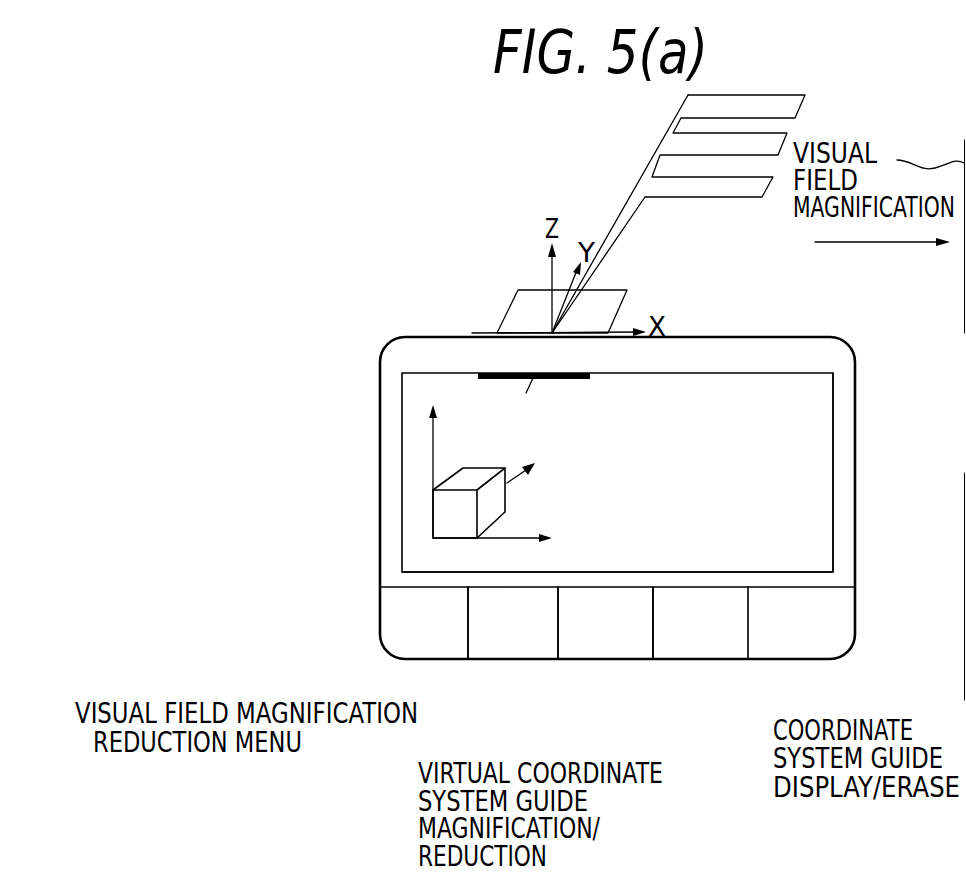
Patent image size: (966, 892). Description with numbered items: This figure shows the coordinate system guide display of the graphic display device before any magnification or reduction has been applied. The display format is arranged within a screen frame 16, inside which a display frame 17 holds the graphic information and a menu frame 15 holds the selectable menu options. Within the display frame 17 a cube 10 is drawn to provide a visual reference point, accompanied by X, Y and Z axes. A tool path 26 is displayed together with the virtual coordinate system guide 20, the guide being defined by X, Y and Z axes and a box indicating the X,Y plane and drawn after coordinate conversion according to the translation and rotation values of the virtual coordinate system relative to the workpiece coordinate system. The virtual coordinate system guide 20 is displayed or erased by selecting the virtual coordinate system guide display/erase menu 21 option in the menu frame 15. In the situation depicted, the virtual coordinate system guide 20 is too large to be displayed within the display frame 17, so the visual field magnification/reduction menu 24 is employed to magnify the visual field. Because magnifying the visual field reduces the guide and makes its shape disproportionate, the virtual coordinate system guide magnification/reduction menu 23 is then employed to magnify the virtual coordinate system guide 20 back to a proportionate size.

The cube 10 is at (457, 532).
The menu frame 15 is at (810, 657).
The screen frame 16 is at (856, 551).
The display frame 17 is at (810, 573).
The virtual coordinate system guide 20 is at (568, 378).
The virtual coordinate system guide display/erase menu 21 is at (720, 660).
The virtual coordinate system guide magnification/reduction menu 23 is at (605, 652).
The visual field magnification/reduction menu 24 is at (482, 650).
The tool path 26 is at (710, 198).